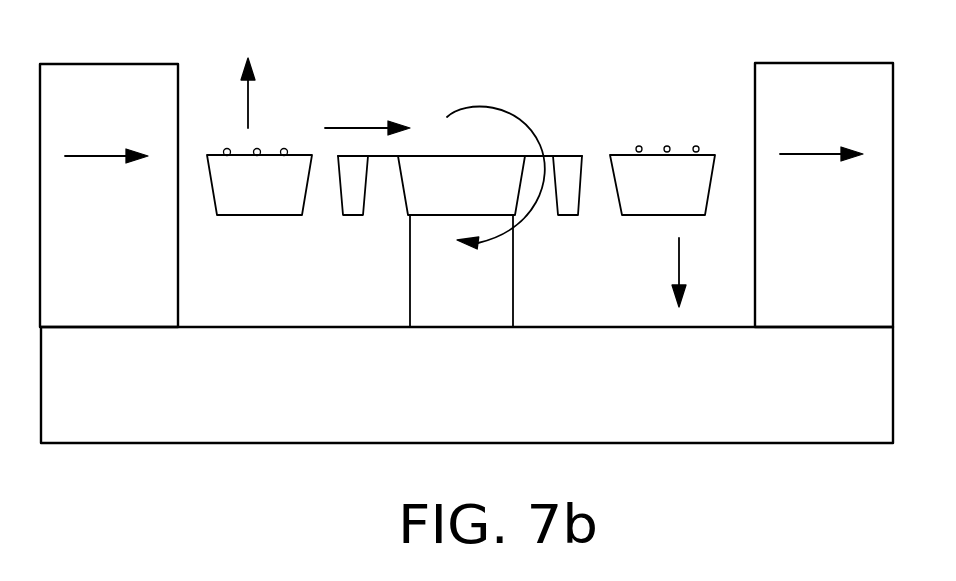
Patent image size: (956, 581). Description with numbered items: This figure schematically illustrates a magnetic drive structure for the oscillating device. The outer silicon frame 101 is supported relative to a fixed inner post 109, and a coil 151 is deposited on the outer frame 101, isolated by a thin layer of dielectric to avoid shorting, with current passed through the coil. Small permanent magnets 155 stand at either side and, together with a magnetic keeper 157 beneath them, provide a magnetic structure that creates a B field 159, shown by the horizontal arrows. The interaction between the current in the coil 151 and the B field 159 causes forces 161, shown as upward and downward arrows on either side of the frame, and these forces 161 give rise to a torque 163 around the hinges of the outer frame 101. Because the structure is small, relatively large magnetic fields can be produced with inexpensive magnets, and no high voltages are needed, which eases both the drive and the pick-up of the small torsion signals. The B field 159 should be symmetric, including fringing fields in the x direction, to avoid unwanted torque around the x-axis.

The outer silicon frame 101 is at (254, 216).
The fixed inner post 109 is at (404, 202).
The coil 151 is at (694, 146).
The permanent magnets 155 is at (92, 64).
The magnetic keeper 157 is at (195, 444).
The B field 159 is at (92, 159).
The forces 161 is at (249, 105).
The torque 163 is at (484, 108).